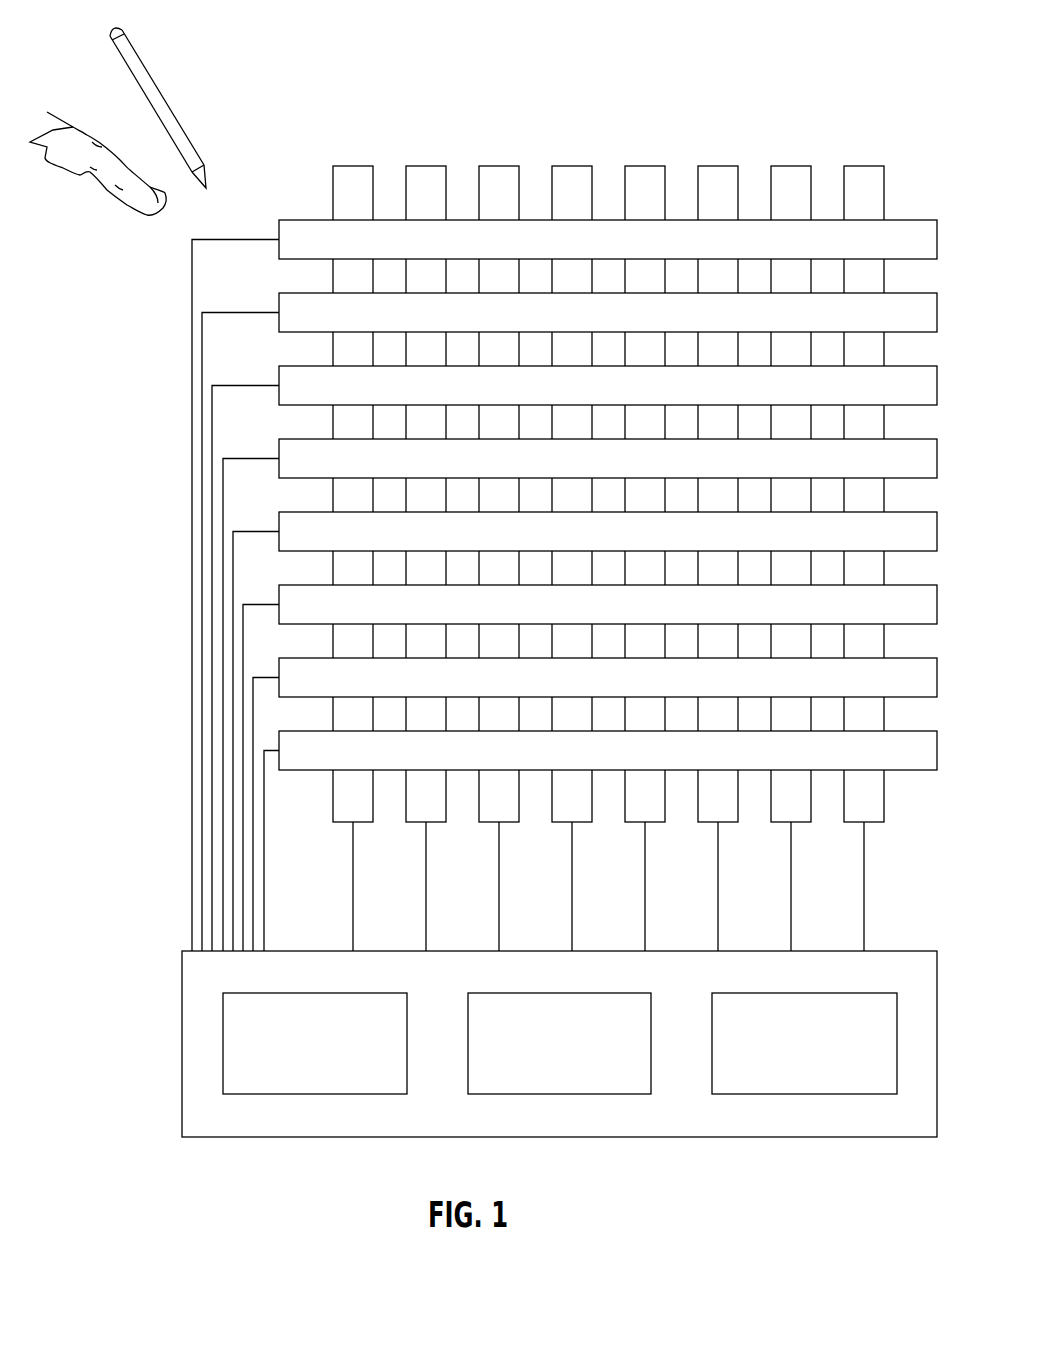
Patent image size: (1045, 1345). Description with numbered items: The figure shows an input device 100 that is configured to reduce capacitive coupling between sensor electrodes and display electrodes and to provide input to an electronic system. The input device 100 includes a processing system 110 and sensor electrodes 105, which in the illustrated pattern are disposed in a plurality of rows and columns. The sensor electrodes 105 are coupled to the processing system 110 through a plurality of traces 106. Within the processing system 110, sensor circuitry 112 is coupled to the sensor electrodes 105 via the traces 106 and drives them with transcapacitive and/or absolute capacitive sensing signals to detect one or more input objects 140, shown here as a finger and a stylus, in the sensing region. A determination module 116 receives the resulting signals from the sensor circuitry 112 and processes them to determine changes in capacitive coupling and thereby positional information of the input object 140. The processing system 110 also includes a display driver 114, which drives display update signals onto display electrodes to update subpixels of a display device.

The input device 100 is at (363, 73).
The sensor electrodes 105 is at (903, 220).
The traces 106 is at (192, 888).
The processing system 110 is at (181, 997).
The sensor circuitry 112 is at (613, 992).
The display driver 114 is at (370, 992).
The determination module 116 is at (857, 992).
The input object 140 is at (75, 128).